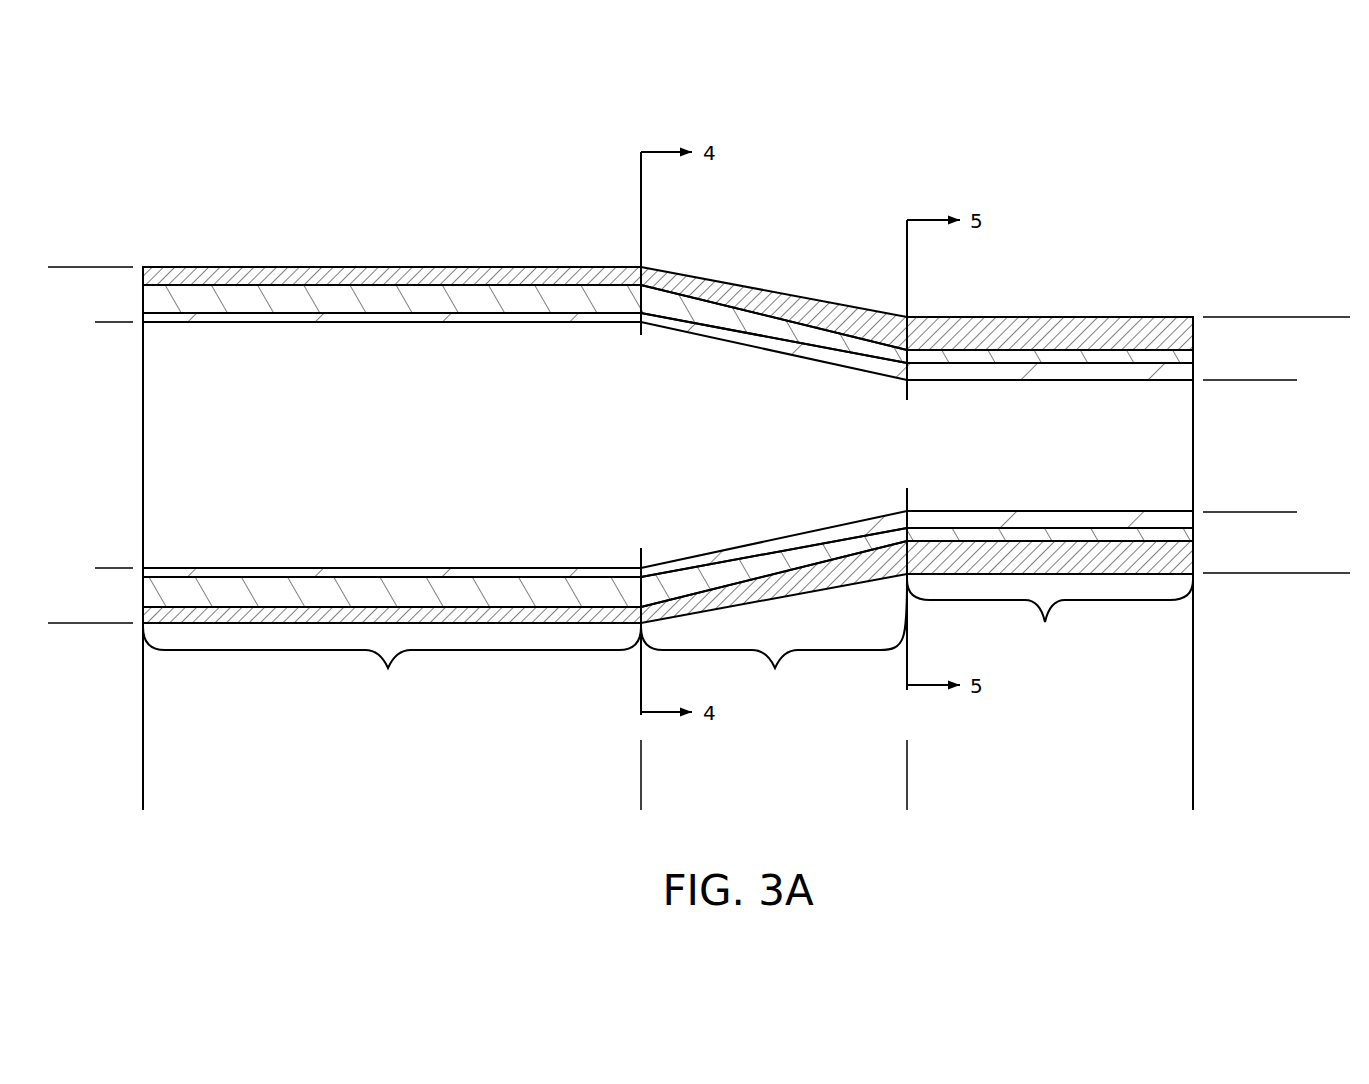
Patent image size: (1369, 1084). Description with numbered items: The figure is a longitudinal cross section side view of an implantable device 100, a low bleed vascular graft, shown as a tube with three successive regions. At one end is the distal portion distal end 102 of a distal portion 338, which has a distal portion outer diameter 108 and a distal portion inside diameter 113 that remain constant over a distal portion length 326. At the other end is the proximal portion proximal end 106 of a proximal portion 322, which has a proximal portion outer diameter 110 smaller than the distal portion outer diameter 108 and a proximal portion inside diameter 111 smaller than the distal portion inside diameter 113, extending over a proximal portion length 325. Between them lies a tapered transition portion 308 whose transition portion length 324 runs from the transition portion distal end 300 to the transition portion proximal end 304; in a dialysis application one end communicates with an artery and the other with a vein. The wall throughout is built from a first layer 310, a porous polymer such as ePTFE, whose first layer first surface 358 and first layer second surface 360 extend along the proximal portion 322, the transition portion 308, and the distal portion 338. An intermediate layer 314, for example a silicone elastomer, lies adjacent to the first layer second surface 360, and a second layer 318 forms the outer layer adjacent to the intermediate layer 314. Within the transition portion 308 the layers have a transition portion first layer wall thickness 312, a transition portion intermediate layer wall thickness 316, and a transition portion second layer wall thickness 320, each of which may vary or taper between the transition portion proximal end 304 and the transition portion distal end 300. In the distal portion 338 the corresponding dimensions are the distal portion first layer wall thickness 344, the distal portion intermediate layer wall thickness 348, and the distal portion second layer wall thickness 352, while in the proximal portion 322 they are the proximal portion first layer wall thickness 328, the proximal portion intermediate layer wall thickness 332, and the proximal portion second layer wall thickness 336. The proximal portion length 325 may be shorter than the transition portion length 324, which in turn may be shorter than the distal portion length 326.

The implantable device 100 is at (316, 185).
The distal portion distal end 102 is at (130, 306).
The proximal portion proximal end 106 is at (1208, 353).
The distal portion outer diameter 108 is at (59, 623).
The proximal portion outer diameter 110 is at (1338, 573).
The proximal portion inside diameter 111 is at (1286, 380).
The distal portion inside diameter 113 is at (108, 322).
The transition portion distal end 300 is at (643, 325).
The transition portion proximal end 304 is at (903, 380).
The transition portion 308 is at (774, 639).
The first layer 310 is at (597, 317).
The transition portion first layer wall thickness 312 is at (732, 390).
The intermediate layer 314 is at (545, 300).
The transition portion intermediate layer wall thickness 316 is at (701, 385).
The second layer 318 is at (508, 275).
The transition portion second layer wall thickness 320 is at (762, 397).
The proximal portion 322 is at (1050, 616).
The transition portion length 324 is at (907, 778).
The proximal portion length 325 is at (1193, 778).
The distal portion length 326 is at (641, 778).
The proximal portion first layer wall thickness 328 is at (933, 425).
The proximal portion intermediate layer wall thickness 332 is at (973, 425).
The proximal portion second layer wall thickness 336 is at (1003, 425).
The distal portion 338 is at (392, 663).
The distal portion first layer wall thickness 344 is at (179, 390).
The distal portion intermediate layer wall thickness 348 is at (218, 390).
The distal portion second layer wall thickness 352 is at (262, 390).
The first layer first surface 358 is at (477, 326).
The first layer second surface 360 is at (390, 313).